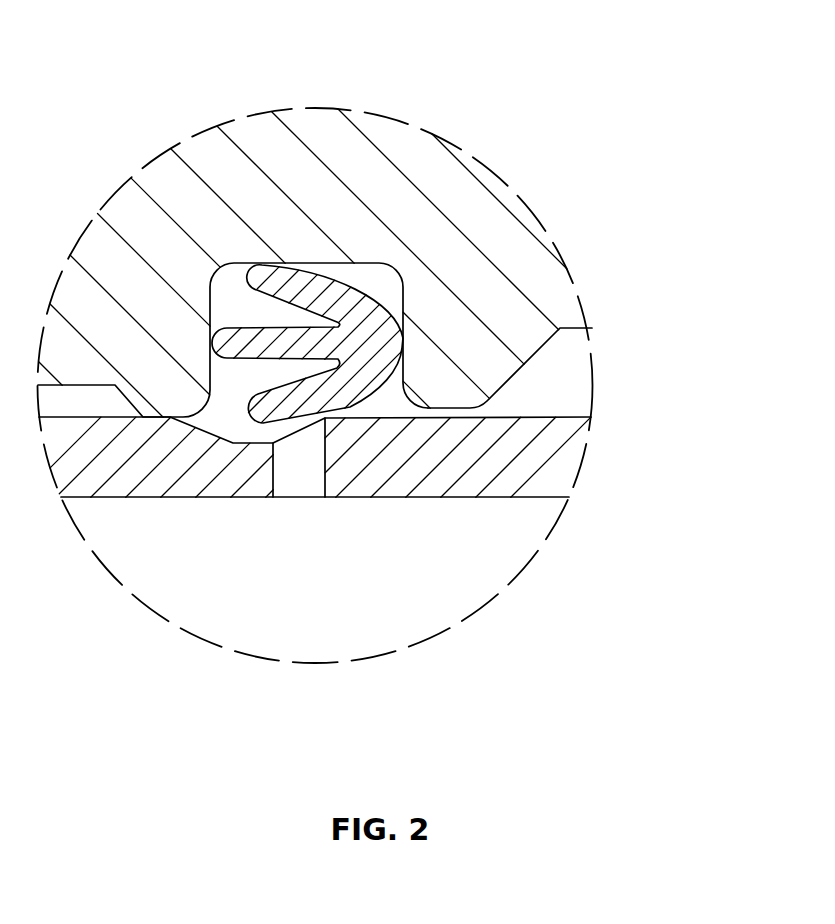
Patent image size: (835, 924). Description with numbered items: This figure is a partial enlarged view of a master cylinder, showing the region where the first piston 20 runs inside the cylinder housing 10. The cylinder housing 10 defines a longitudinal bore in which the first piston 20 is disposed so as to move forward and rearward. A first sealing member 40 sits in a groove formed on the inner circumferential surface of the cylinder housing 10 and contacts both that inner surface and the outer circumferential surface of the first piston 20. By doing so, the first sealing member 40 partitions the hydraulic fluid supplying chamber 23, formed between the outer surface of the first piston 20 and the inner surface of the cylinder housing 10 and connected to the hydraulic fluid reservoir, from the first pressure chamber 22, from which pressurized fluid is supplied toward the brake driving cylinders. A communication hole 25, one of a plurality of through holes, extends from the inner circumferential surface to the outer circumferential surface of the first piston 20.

The cylinder housing 10 is at (262, 137).
The first piston 20 is at (472, 480).
The first pressure chamber 22 is at (375, 600).
The hydraulic fluid supplying chamber 23 is at (563, 395).
The communication hole 25 is at (298, 470).
The first sealing member 40 is at (367, 328).